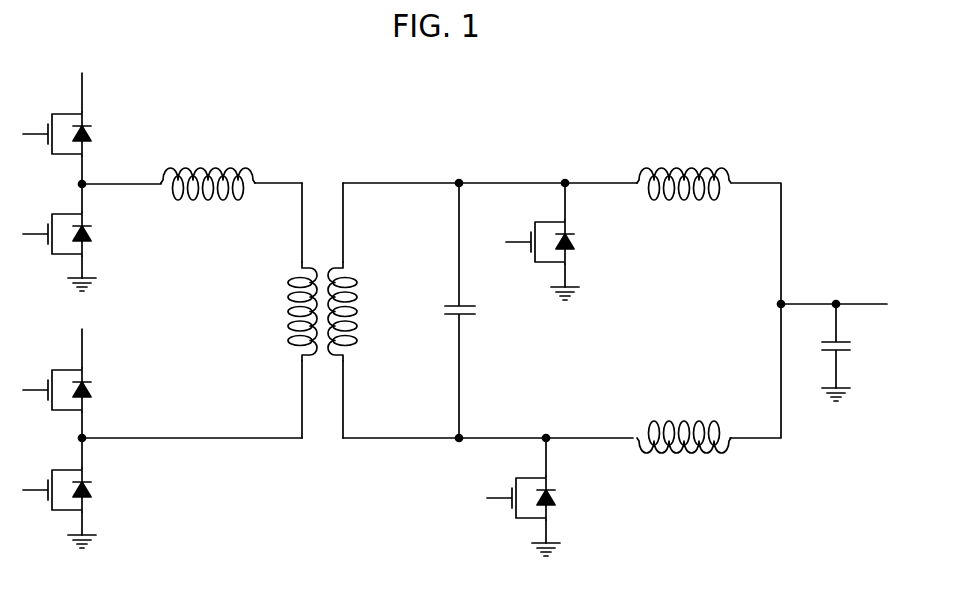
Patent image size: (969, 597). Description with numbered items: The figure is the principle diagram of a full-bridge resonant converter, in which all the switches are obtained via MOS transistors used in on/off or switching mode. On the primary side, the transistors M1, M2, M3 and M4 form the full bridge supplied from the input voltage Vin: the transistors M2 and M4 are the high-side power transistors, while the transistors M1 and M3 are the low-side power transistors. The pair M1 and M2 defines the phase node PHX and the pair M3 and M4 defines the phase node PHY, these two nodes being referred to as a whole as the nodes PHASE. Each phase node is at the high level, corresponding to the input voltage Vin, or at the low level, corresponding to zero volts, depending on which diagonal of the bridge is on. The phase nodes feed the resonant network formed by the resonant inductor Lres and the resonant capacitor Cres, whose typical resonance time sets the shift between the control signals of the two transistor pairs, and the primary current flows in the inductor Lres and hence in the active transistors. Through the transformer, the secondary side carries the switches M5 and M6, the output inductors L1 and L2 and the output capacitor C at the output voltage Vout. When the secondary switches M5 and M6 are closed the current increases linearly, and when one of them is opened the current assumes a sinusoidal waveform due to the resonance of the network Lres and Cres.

The low-side power transistor M1 is at (77, 237).
The high-side power transistor M2 is at (77, 148).
The low-side power transistor M3 is at (77, 493).
The high-side power transistor M4 is at (77, 403).
The secondary switch M5 is at (549, 496).
The secondary switch M6 is at (558, 240).
The resonant inductor Lres is at (231, 171).
The resonant capacitor Cres is at (432, 311).
The output inductor L1 is at (684, 170).
The output inductor L2 is at (684, 422).
The output capacitor C is at (849, 352).
The input voltage Vin is at (100, 71).
The output voltage Vout is at (833, 289).
The phase node PHX is at (120, 171).
The phase node PHY is at (191, 426).